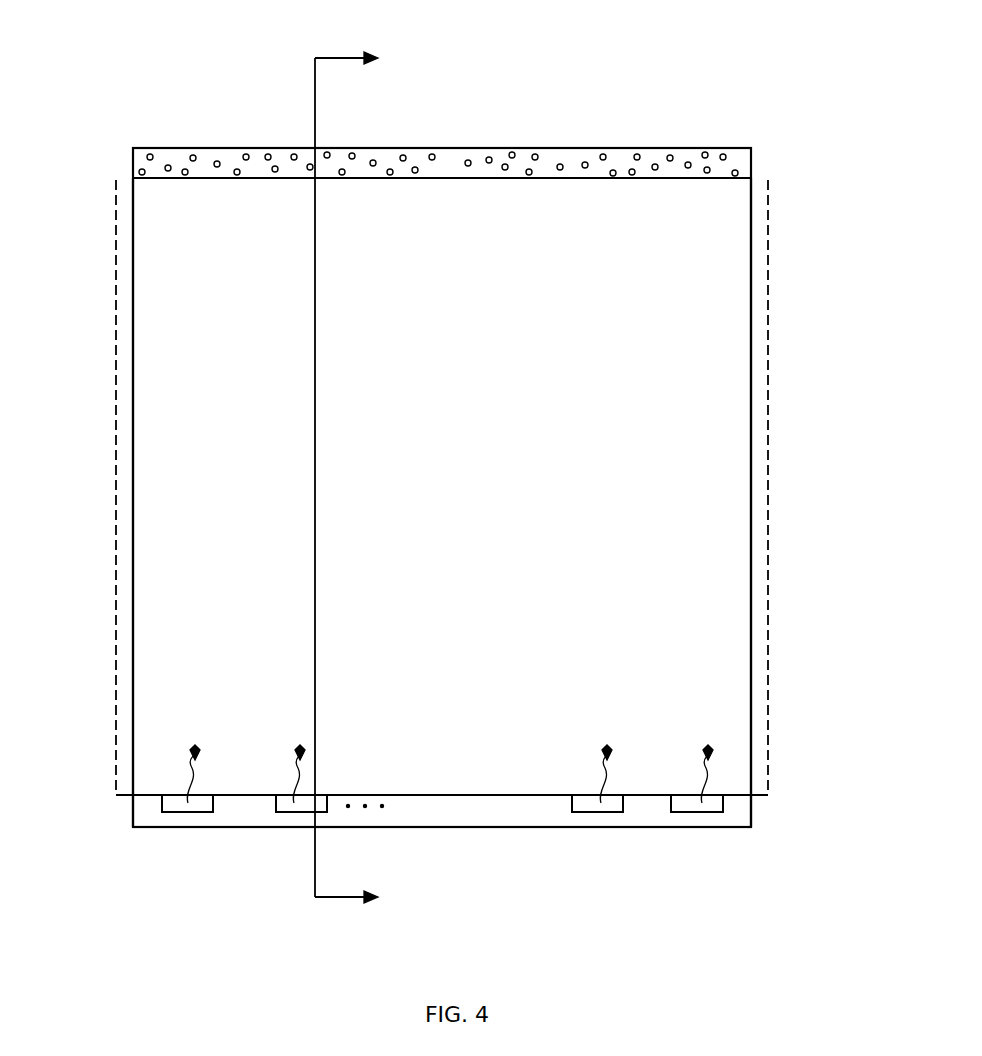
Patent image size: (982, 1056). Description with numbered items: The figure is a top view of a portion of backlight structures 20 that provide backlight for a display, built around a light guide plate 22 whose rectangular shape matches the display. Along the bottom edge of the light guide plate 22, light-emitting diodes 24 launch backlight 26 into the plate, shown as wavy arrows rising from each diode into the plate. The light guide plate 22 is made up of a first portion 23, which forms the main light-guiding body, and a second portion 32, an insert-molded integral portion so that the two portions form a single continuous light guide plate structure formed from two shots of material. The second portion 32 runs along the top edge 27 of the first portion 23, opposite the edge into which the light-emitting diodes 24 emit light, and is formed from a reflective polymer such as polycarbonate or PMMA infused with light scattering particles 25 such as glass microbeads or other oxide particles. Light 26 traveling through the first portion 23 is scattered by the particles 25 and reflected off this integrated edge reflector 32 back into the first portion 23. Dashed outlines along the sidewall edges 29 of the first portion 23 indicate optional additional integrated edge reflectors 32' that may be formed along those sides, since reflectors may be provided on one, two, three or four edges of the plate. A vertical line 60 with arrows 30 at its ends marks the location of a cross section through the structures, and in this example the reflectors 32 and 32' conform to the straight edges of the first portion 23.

The backlight structures 20 is at (520, 80).
The light guide plate 22 is at (467, 467).
The first portion 23 is at (725, 423).
The light-emitting diodes 24 is at (180, 805).
The light scattering particles 25 is at (169, 165).
The backlight 26 is at (296, 766).
The top edge 27 is at (572, 178).
The sidewall edges 29 is at (133, 432).
The section line 30 is at (343, 56).
The second portion 32 is at (775, 170).
The additional integrated edge reflectors 32' is at (443, 487).
The divider line 60 is at (318, 98).